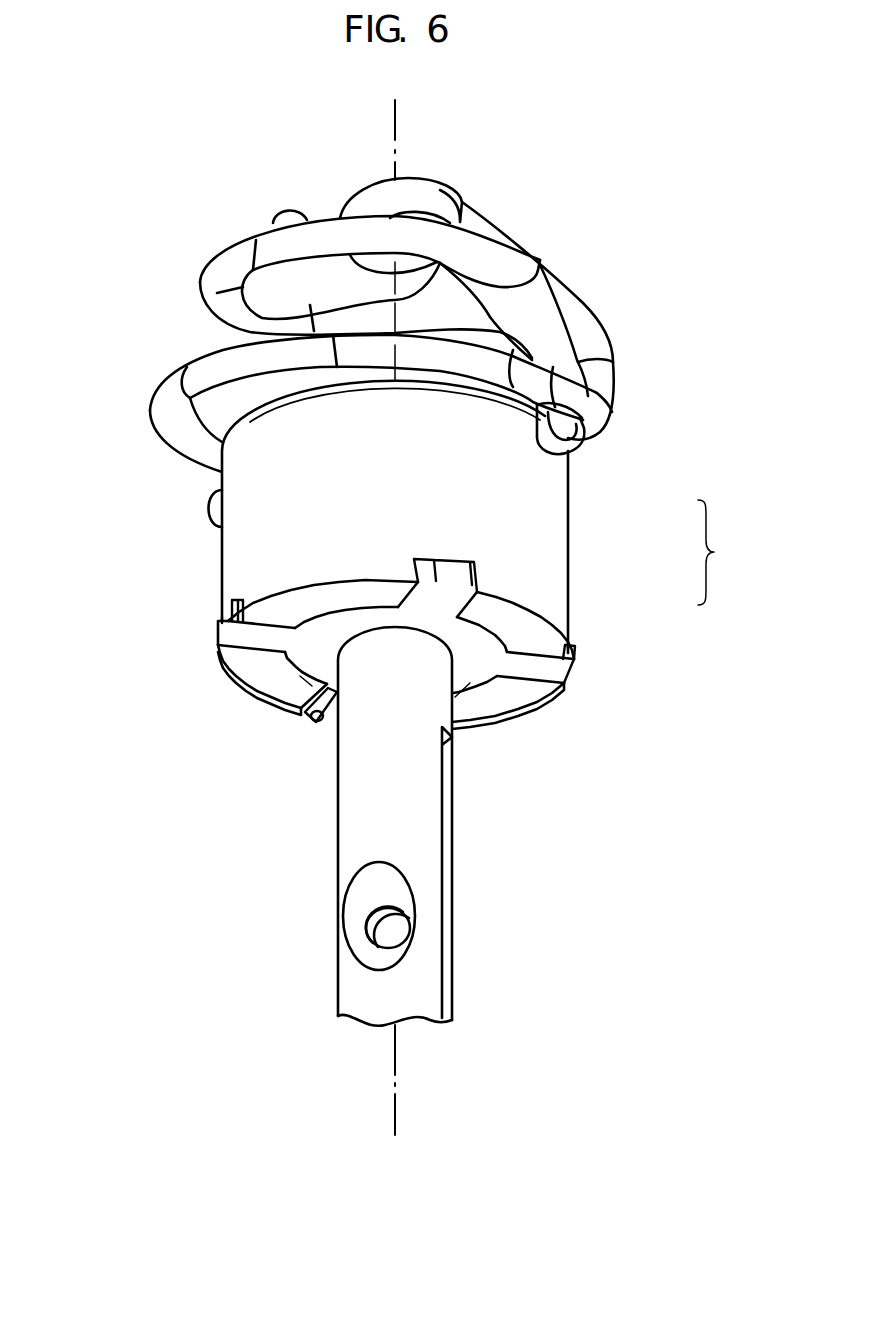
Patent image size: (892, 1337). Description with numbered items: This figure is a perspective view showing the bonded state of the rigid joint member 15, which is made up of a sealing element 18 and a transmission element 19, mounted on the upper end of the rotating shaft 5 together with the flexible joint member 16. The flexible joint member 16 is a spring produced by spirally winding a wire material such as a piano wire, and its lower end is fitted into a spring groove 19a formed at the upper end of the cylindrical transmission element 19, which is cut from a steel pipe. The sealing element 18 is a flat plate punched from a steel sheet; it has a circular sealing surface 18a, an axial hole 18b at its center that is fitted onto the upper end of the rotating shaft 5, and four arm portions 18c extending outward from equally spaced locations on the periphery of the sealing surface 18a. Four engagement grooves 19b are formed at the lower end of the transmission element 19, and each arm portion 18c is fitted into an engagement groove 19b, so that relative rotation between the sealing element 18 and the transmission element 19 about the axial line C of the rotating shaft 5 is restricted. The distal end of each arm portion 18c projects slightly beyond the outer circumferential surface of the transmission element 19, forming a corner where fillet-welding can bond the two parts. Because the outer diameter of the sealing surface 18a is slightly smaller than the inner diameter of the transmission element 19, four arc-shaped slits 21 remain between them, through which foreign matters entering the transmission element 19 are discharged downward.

The rotating shaft 5 is at (420, 845).
The rigid joint member 15 is at (721, 552).
The flexible joint member 16 is at (585, 302).
The sealing element 18 is at (558, 623).
The sealing surface 18a is at (465, 681).
The axial hole 18b is at (300, 677).
The arm portions 18c is at (444, 590).
The transmission element 19 is at (555, 527).
The spring groove 19a is at (560, 447).
The engagement grooves 19b is at (436, 558).
The slits 21 is at (288, 661).
The axial line C is at (395, 1114).